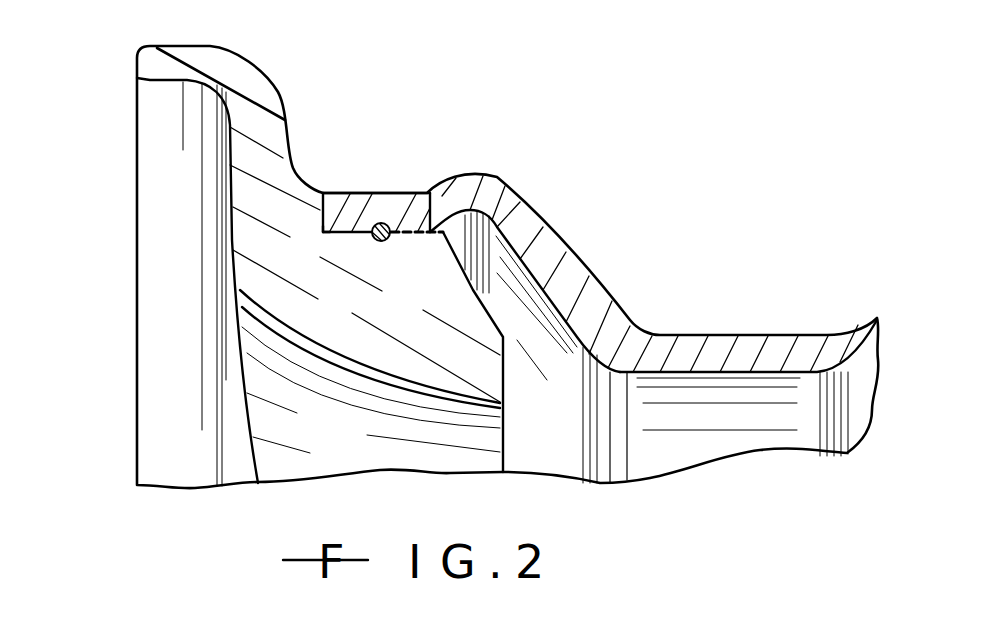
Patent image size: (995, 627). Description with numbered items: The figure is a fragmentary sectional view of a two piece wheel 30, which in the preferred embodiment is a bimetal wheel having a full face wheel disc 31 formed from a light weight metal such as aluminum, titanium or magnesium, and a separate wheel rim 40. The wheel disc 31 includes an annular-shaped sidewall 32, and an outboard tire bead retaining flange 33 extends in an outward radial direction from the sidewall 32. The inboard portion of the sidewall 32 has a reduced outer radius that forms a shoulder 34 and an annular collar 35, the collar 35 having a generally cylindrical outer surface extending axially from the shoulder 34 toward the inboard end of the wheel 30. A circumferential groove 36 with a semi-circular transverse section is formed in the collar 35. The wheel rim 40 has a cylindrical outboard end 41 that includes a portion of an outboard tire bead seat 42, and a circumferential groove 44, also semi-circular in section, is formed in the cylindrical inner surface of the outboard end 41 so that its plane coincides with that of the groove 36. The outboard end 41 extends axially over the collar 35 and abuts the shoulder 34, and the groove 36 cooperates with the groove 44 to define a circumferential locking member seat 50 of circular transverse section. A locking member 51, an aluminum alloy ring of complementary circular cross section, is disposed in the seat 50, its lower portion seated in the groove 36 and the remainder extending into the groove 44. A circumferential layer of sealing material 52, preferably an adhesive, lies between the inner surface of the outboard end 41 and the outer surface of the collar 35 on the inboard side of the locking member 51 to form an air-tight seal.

The two piece wheel 30 is at (633, 113).
The wheel disc 31 is at (158, 418).
The sidewall 32 is at (353, 343).
The outboard tire bead retaining flange 33 is at (260, 93).
The shoulder 34 is at (413, 194).
The collar 35 is at (395, 233).
The groove 36 is at (368, 235).
The wheel rim 40 is at (723, 350).
The outboard end 41 is at (353, 193).
The outboard tire bead seat 42 is at (410, 193).
The groove 44 is at (388, 193).
The locking member seat 50 is at (381, 240).
The locking member 51 is at (366, 235).
The sealing material 52 is at (427, 193).